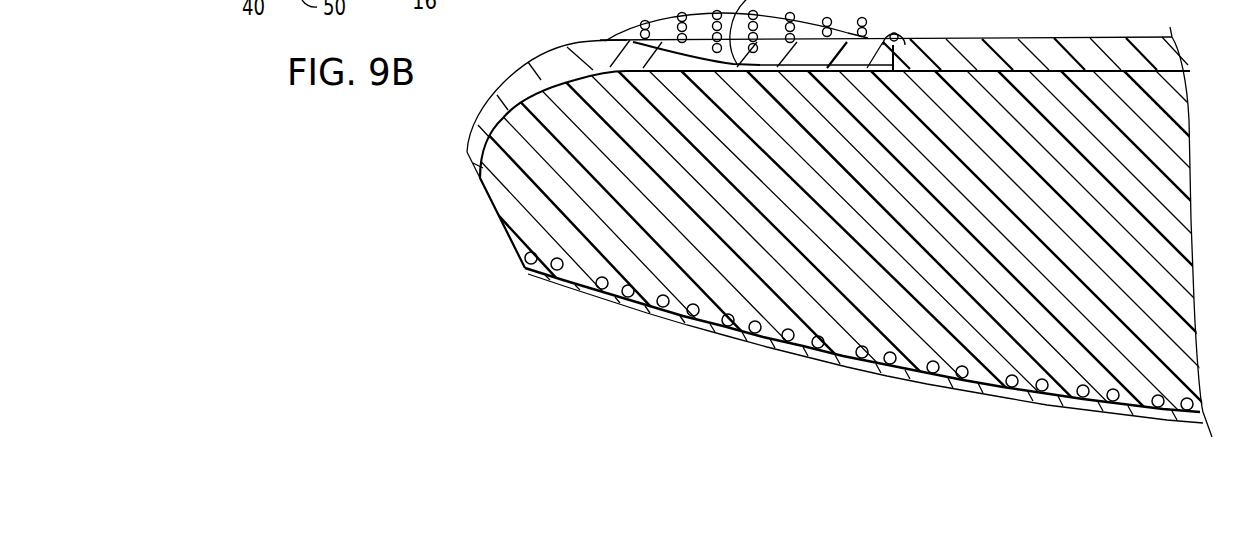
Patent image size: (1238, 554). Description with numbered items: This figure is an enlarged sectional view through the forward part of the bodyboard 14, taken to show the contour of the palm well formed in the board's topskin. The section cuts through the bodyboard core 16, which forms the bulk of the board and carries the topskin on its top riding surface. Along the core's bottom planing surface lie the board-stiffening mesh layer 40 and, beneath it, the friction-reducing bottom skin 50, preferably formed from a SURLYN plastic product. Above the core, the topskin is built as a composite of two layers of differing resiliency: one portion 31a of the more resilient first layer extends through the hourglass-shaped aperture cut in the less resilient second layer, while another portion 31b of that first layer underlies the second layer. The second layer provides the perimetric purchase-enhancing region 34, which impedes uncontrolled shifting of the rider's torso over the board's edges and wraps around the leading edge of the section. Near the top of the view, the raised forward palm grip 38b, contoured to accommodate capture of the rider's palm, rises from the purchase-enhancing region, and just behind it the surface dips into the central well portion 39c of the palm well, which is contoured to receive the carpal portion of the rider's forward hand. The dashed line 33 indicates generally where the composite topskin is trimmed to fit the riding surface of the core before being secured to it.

The bodyboard 14 is at (518, 294).
The bodyboard core 16 is at (600, 232).
The perimetric purchase-enhancing region 34 is at (536, 57).
The portion of the first layer 31a is at (1115, 26).
The portion of the first layer underlying the second layer 31b is at (483, 182).
The bottom skin 50 is at (730, 338).
The mesh layer 40 is at (650, 306).
The forward palm grip 38b is at (862, 25).
The central well portion 39c is at (893, 19).
The dashed line 33 is at (702, 44).